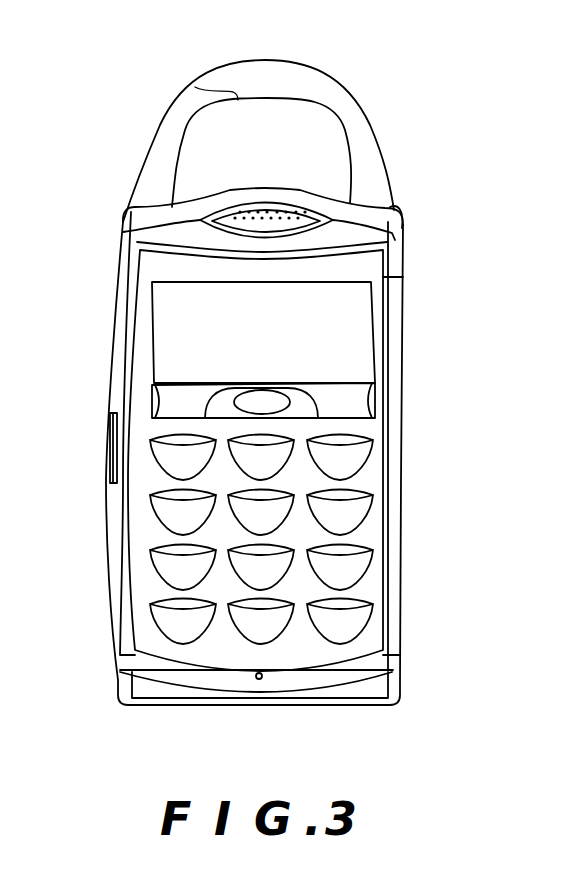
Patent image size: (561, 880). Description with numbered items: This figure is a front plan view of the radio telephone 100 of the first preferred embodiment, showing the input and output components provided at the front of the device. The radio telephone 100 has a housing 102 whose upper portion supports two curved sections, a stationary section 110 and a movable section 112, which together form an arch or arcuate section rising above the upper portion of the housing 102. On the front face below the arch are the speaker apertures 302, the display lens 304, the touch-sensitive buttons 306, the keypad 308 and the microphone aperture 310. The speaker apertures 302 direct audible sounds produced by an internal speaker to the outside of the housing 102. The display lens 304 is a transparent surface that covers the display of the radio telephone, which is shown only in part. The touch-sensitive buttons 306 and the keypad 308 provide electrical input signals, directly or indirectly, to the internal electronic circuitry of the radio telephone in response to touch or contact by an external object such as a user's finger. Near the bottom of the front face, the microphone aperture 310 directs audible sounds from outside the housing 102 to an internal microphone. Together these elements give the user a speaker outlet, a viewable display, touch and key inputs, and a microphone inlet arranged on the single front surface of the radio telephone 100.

The radio telephone 100 is at (80, 60).
The housing 102 is at (458, 437).
The stationary section 110 is at (324, 88).
The movable section 112 is at (166, 144).
The speaker apertures 302 is at (267, 207).
The display lens 304 is at (167, 323).
The touch-sensitive buttons 306 is at (165, 405).
The keypad 308 is at (146, 521).
The microphone aperture 310 is at (259, 680).